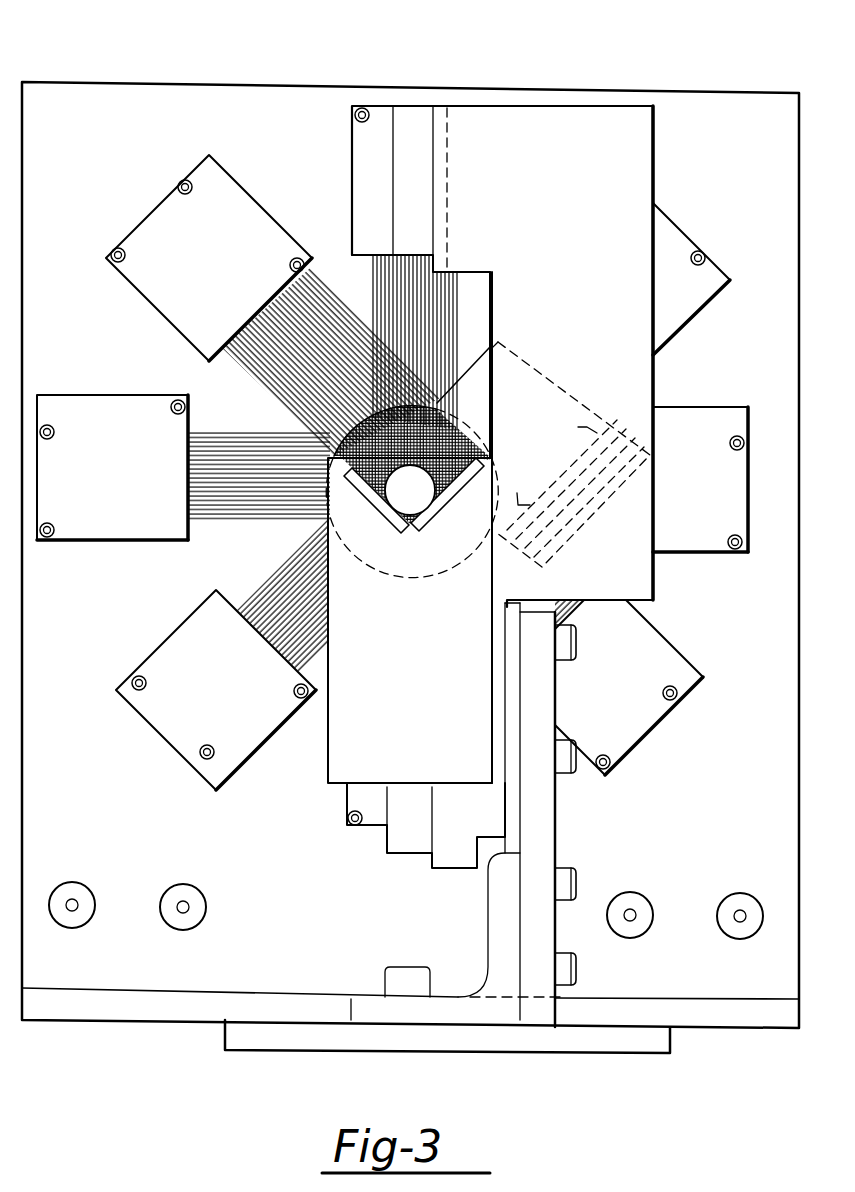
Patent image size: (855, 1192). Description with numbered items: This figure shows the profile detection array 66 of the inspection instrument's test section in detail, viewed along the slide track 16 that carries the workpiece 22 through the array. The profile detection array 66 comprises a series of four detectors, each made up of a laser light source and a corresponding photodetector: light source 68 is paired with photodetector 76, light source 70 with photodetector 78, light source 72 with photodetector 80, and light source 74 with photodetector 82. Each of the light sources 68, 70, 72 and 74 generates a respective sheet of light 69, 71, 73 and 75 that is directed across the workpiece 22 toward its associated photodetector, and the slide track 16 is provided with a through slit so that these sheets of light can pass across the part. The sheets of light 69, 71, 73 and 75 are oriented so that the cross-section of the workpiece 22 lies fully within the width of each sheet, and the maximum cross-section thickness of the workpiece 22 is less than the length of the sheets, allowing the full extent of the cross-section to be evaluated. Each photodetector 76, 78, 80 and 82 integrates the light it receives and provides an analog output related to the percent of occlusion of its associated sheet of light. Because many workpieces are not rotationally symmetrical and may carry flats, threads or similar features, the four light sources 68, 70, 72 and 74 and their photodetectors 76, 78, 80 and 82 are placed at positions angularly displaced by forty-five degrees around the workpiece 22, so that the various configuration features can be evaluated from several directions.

The slide track 16 is at (402, 534).
The workpiece 22 is at (418, 502).
The profile detection array 66 is at (228, 104).
The light source 68 is at (357, 165).
The sheet of light 69 is at (367, 297).
The light source 70 is at (158, 300).
The sheet of light 71 is at (265, 381).
The light source 72 is at (112, 398).
The sheet of light 73 is at (260, 522).
The light source 74 is at (148, 660).
The sheet of light 75 is at (257, 602).
The photodetector 76 is at (363, 830).
The photodetector 78 is at (690, 655).
The photodetector 80 is at (698, 407).
The photodetector 82 is at (700, 240).